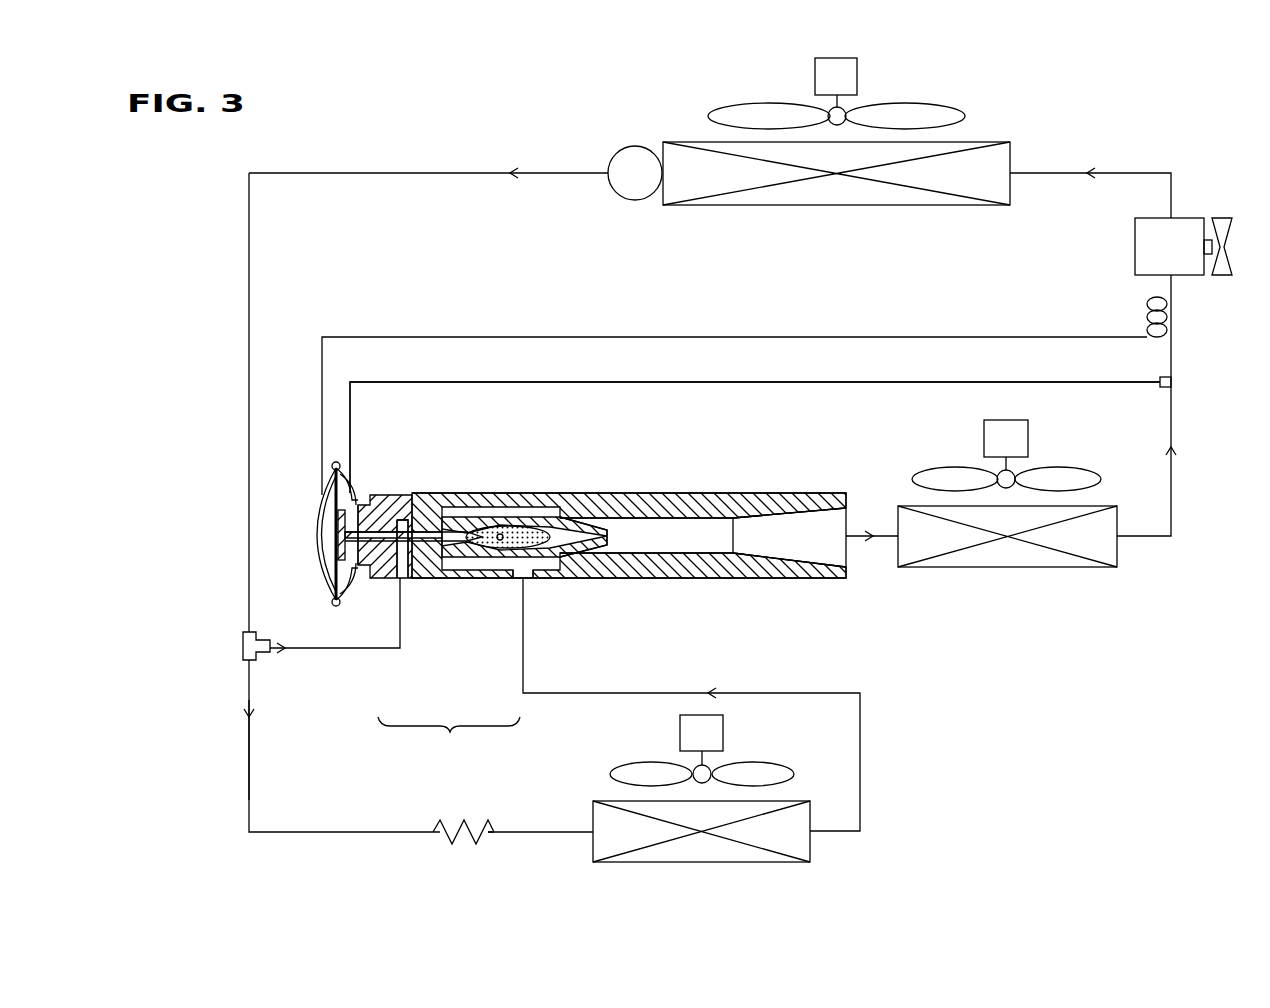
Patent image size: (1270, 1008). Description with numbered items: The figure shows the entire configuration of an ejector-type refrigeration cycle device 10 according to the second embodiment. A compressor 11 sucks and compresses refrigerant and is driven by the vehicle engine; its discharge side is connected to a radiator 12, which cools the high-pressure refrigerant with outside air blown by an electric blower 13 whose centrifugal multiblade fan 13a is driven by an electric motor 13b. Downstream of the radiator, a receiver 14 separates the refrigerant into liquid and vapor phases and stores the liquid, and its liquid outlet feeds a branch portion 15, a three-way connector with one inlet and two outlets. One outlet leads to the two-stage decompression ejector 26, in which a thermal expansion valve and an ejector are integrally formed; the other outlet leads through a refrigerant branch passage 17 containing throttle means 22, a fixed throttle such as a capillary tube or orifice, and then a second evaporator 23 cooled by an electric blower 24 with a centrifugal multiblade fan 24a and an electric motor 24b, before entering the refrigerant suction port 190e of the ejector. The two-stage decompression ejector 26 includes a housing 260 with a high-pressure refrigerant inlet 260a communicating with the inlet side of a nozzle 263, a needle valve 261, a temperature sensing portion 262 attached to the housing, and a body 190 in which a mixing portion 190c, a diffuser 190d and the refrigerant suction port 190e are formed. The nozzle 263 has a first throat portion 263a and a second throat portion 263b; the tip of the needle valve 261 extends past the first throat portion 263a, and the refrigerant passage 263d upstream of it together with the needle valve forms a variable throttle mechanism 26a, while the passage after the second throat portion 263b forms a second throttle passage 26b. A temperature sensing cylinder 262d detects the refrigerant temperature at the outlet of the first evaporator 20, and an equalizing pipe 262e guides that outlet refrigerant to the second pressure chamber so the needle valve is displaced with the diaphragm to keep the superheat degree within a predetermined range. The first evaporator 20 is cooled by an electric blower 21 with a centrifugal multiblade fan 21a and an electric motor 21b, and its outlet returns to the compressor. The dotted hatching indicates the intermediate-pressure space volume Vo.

The ejector-type refrigeration cycle device 10 is at (1130, 150).
The compressor 11 is at (1195, 218).
The radiator 12 is at (945, 205).
The electric blower 13 is at (861, 93).
The centrifugal multiblade fan 13a is at (950, 112).
The electric motor 13b is at (815, 85).
The receiver 14 is at (625, 148).
The branch portion 15 is at (243, 650).
The refrigerant branch passage 17 is at (249, 780).
The first evaporator 20 is at (1080, 567).
The electric blower 21 is at (984, 446).
The centrifugal multiblade fan 21a is at (940, 472).
The electric motor 21b is at (984, 440).
The throttle means 22 is at (440, 832).
The second evaporator 23 is at (810, 850).
The electric blower 24 is at (675, 750).
The centrifugal multiblade fan 24a is at (620, 774).
The electric motor 24b is at (680, 740).
The two-stage decompression ejector 26 is at (600, 493).
The variable throttle mechanism 26a is at (449, 735).
The second throttle passage 26b is at (645, 520).
The body 190 is at (733, 550).
The mixing portion 190c is at (686, 560).
The diffuser 190d is at (780, 560).
The refrigerant suction port 190e is at (533, 578).
The housing 260 is at (388, 493).
The high-pressure refrigerant inlet 260a is at (397, 578).
The needle valve 261 is at (415, 578).
The temperature sensing portion 262 is at (315, 535).
The temperature sensing cylinder 262d is at (1147, 310).
The equalizing pipe 262e is at (405, 382).
The nozzle 263 is at (485, 530).
The first throat portion 263a is at (445, 530).
The second throat portion 263b is at (548, 520).
The refrigerant passage 263d is at (470, 560).
The intermediate-pressure space volume Vo is at (500, 550).